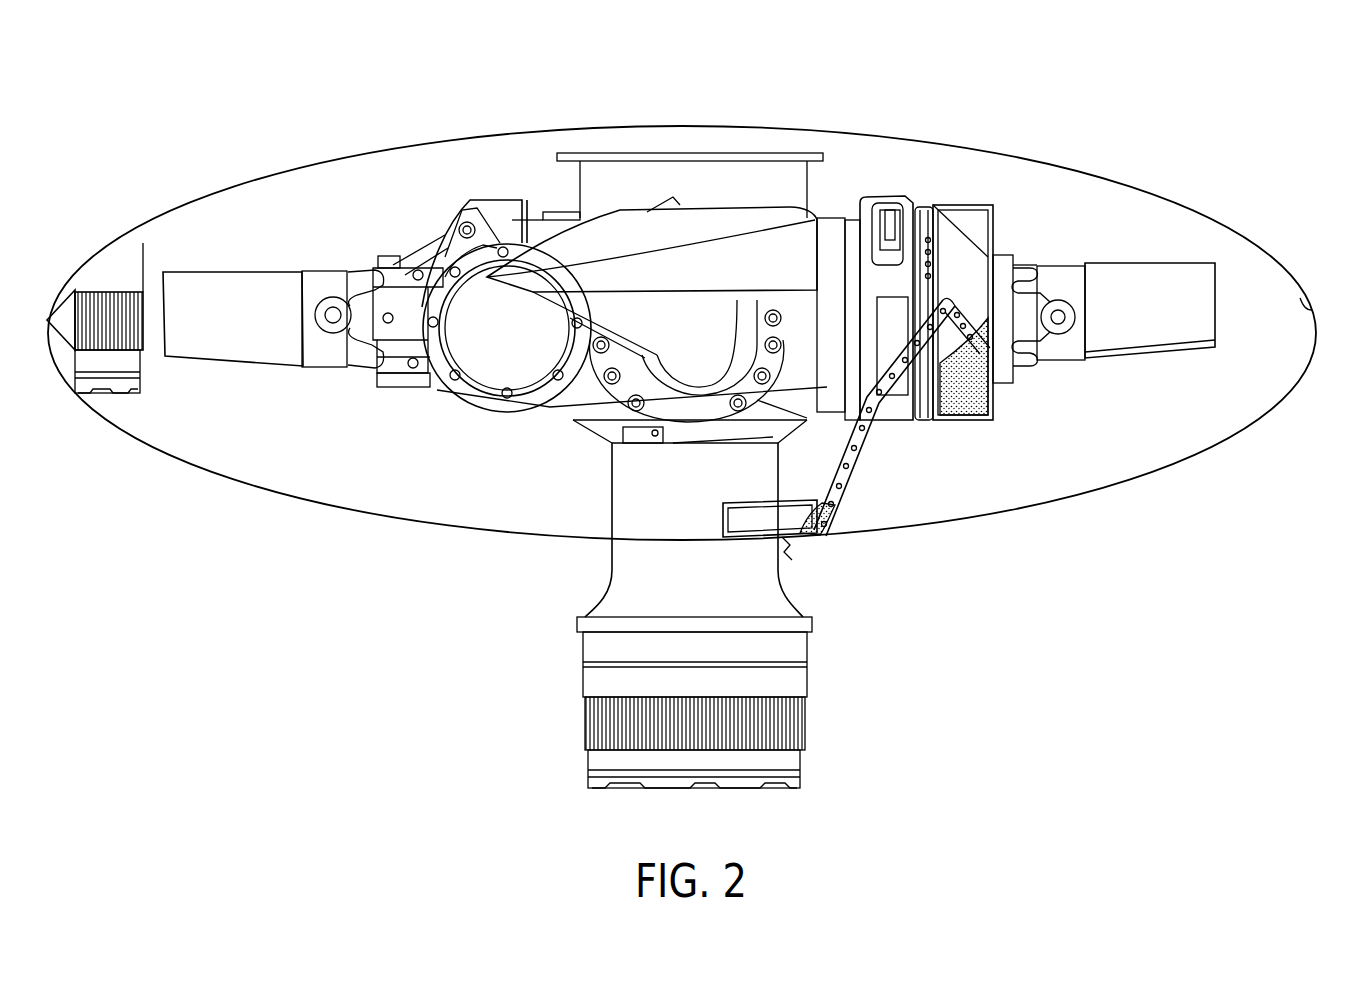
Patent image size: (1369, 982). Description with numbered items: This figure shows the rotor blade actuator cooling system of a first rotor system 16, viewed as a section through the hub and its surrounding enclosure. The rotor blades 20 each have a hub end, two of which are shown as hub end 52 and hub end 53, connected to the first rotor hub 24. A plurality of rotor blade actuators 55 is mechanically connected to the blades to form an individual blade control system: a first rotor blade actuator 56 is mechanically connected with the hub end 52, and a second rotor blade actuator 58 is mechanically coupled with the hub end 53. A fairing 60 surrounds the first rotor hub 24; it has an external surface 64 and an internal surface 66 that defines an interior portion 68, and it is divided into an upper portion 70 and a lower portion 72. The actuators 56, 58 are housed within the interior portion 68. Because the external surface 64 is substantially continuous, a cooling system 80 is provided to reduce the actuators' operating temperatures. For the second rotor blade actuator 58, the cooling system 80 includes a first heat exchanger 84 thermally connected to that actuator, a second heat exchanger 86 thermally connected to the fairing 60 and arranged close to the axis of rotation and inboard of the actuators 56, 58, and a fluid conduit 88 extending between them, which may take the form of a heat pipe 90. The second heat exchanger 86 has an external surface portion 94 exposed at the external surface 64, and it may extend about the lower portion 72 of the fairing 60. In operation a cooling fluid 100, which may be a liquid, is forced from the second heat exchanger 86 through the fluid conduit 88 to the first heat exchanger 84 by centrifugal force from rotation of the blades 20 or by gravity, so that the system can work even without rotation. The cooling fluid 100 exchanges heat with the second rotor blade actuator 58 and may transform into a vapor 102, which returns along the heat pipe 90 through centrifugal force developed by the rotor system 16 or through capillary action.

The first rotor system 16 is at (322, 128).
The rotor blade 20 is at (1163, 245).
The first rotor hub 24 is at (507, 173).
The hub end 52 is at (340, 287).
The hub end 53 is at (1043, 333).
The rotor blade actuators 55 is at (370, 216).
The first rotor blade actuator 56 is at (426, 408).
The second rotor blade actuator 58 is at (892, 172).
The fairing 60 is at (1277, 410).
The external surface 64 is at (1032, 158).
The internal surface 66 is at (1312, 310).
The interior portion 68 is at (1073, 425).
The upper portion 70 is at (548, 100).
The lower portion 72 is at (483, 578).
The cooling system 80 is at (940, 490).
The first heat exchanger 84 is at (975, 445).
The second heat exchanger 86 is at (728, 517).
The fluid conduit 88 is at (862, 482).
The heat pipe 90 is at (885, 408).
The external surface portion 94 is at (800, 578).
The cooling fluid 100 is at (972, 378).
The vapor 102 is at (963, 270).